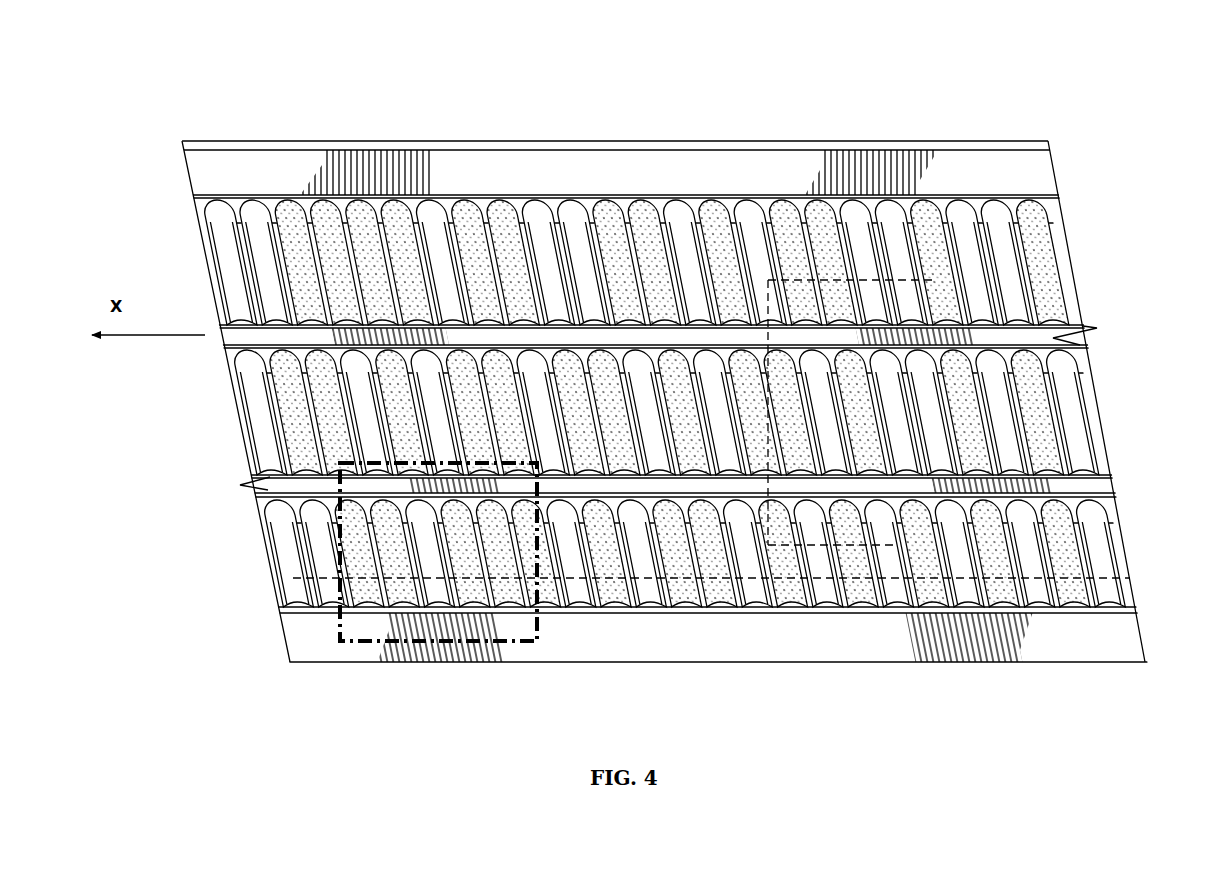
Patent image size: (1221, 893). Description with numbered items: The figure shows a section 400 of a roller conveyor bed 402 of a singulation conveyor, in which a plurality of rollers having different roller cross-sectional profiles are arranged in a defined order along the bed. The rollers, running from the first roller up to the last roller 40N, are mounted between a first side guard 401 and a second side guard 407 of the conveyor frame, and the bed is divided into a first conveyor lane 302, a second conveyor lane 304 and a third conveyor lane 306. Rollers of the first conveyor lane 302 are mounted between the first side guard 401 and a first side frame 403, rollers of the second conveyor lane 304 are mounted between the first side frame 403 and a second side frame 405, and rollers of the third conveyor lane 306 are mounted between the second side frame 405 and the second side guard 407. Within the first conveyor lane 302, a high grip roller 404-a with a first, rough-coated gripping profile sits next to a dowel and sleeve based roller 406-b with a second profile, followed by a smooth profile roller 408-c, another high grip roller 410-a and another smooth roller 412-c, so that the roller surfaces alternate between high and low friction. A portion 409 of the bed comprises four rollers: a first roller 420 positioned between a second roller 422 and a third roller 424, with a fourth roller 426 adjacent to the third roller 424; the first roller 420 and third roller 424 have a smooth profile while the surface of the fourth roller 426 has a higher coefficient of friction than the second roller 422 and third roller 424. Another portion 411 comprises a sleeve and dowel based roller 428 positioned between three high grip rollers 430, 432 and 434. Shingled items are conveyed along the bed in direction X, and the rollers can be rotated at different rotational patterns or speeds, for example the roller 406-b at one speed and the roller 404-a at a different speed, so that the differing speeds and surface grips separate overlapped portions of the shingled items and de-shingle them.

The section of roller conveyor bed 400 is at (180, 80).
The first side guard 401 is at (997, 173).
The roller conveyor bed 402 is at (143, 236).
The first side frame 403 is at (1053, 342).
The second side frame 405 is at (1087, 482).
The second side guard 407 is at (1118, 640).
The first conveyor lane 302 is at (684, 391).
The second conveyor lane 304 is at (668, 538).
The third conveyor lane 306 is at (696, 619).
The portion of roller bed 409 is at (806, 203).
The roller 412-c is at (893, 237).
The roller 410-a is at (926, 220).
The roller 408-c is at (980, 281).
The roller 406-b is at (1013, 243).
The roller 404-a is at (1043, 270).
The portion of roller bed 411 is at (334, 522).
The roller 40N is at (589, 444).
The first roller 420 is at (890, 250).
The second roller 422 is at (925, 400).
The third roller 424 is at (850, 450).
The fourth roller 426 is at (813, 430).
The sleeve and dowel cross-sectional profile-based roller 428 is at (467, 593).
The high grip cross-sectional profile roller 430 is at (508, 593).
The high grip cross-sectional profile roller 432 is at (437, 593).
The high grip cross-sectional profile roller 434 is at (400, 597).